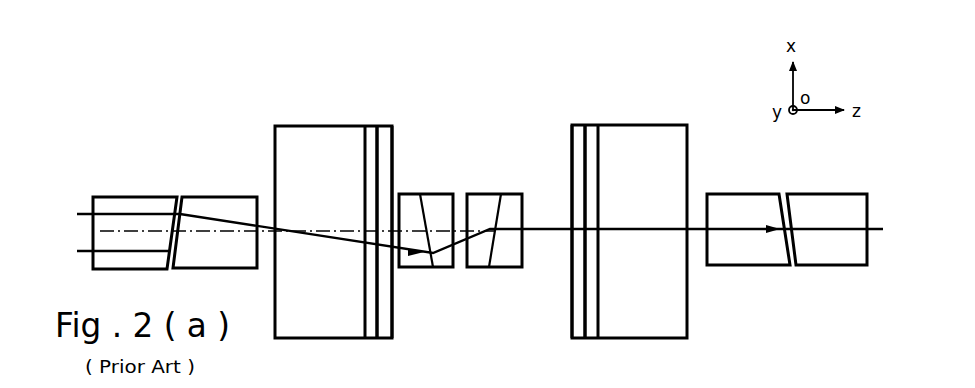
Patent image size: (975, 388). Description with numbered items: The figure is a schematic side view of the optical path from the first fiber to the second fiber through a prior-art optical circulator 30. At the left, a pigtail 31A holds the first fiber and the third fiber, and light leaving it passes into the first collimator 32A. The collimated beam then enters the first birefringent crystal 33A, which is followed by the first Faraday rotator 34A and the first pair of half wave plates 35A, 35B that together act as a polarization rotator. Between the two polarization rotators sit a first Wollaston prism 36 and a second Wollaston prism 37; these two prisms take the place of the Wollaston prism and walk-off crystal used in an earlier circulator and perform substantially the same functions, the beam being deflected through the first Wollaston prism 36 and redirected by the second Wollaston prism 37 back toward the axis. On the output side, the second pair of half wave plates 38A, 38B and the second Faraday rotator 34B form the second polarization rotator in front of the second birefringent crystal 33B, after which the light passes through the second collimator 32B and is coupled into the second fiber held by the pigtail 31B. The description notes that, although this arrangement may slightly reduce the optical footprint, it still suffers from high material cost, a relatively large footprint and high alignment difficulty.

The optical circulator 30 is at (102, 84).
The pigtail 31A is at (152, 197).
The first collimator 32A is at (208, 197).
The first birefringent crystal 33A is at (346, 195).
The first Faraday rotator 34A is at (372, 126).
The half wave plate 35A is at (425, 195).
The half wave plate 35B is at (393, 137).
The first Wollaston prism 36 is at (432, 194).
The second Wollaston prism 37 is at (478, 194).
The half wave plate 38A is at (535, 207).
The half wave plate 38B is at (571, 138).
The second Faraday rotator 34B is at (592, 125).
The second birefringent crystal 33B is at (600, 193).
The second collimator 32B is at (728, 194).
The pigtail 31B is at (808, 194).